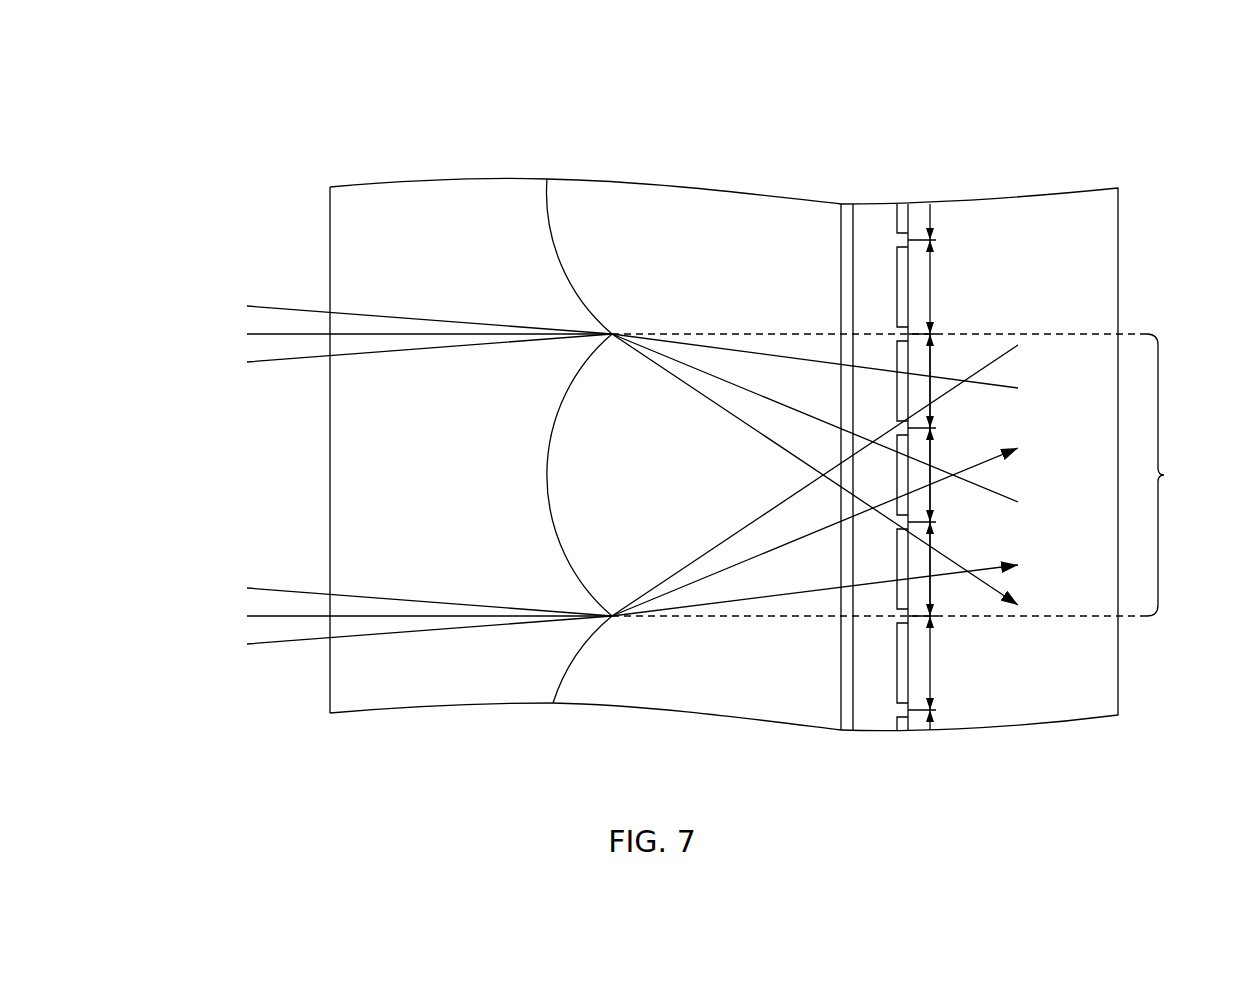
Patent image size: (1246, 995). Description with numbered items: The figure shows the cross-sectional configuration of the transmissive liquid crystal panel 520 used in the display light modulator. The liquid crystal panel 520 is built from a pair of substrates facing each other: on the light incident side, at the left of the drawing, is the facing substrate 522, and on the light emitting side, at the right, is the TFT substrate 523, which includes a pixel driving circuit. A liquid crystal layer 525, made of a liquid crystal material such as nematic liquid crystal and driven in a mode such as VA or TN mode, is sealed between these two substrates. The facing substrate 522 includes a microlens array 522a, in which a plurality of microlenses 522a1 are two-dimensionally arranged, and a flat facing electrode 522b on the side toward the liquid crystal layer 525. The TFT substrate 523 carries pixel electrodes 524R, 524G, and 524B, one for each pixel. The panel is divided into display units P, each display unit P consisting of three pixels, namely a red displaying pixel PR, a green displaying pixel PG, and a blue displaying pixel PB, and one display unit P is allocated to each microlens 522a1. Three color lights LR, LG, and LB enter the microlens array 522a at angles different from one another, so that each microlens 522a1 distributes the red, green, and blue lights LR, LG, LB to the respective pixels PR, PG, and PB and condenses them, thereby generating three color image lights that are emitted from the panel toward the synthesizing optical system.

The liquid crystal panel 520 is at (1179, 131).
The facing substrate 522 is at (435, 190).
The microlens array 522a is at (699, 204).
The microlens 522a1 is at (547, 521).
The facing electrode 522b is at (851, 225).
The TFT substrate 523 is at (1062, 213).
The liquid crystal layer 525 is at (878, 231).
The pixel electrode 524B is at (920, 376).
The pixel electrode 524G is at (878, 520).
The pixel electrode 524R is at (900, 588).
The red color light LR is at (272, 307).
The green color light LG is at (254, 332).
The blue color light LB is at (278, 364).
The blue displaying pixel PB is at (933, 357).
The green displaying pixel PG is at (933, 450).
The red displaying pixel PR is at (933, 592).
The display unit P is at (1165, 475).